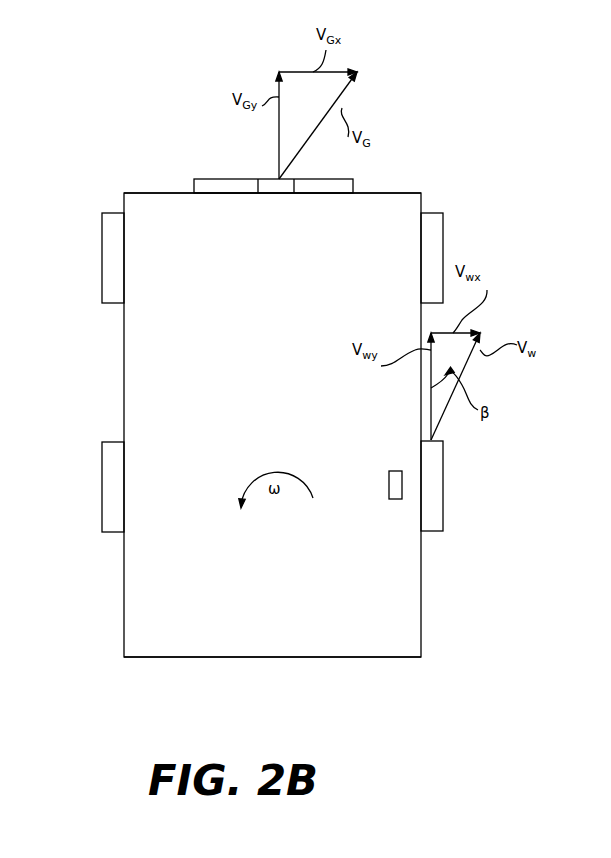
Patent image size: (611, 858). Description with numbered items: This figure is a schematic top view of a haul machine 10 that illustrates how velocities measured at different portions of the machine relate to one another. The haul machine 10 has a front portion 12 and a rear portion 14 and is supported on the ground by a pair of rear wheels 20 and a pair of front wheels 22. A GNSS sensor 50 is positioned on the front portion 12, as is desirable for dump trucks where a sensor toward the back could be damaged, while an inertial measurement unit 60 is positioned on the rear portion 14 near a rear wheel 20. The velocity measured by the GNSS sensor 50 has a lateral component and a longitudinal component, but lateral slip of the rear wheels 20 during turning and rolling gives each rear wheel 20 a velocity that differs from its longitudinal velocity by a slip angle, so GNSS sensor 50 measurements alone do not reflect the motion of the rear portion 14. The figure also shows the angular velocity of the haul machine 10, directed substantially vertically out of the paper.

The haul machine 10 is at (500, 160).
The front portion 12 is at (158, 183).
The rear portion 14 is at (403, 663).
The rear wheels 20 is at (102, 487).
The front wheels 22 is at (102, 231).
The GNSS sensor 50 is at (272, 178).
The inertial measurement unit 60 is at (395, 471).